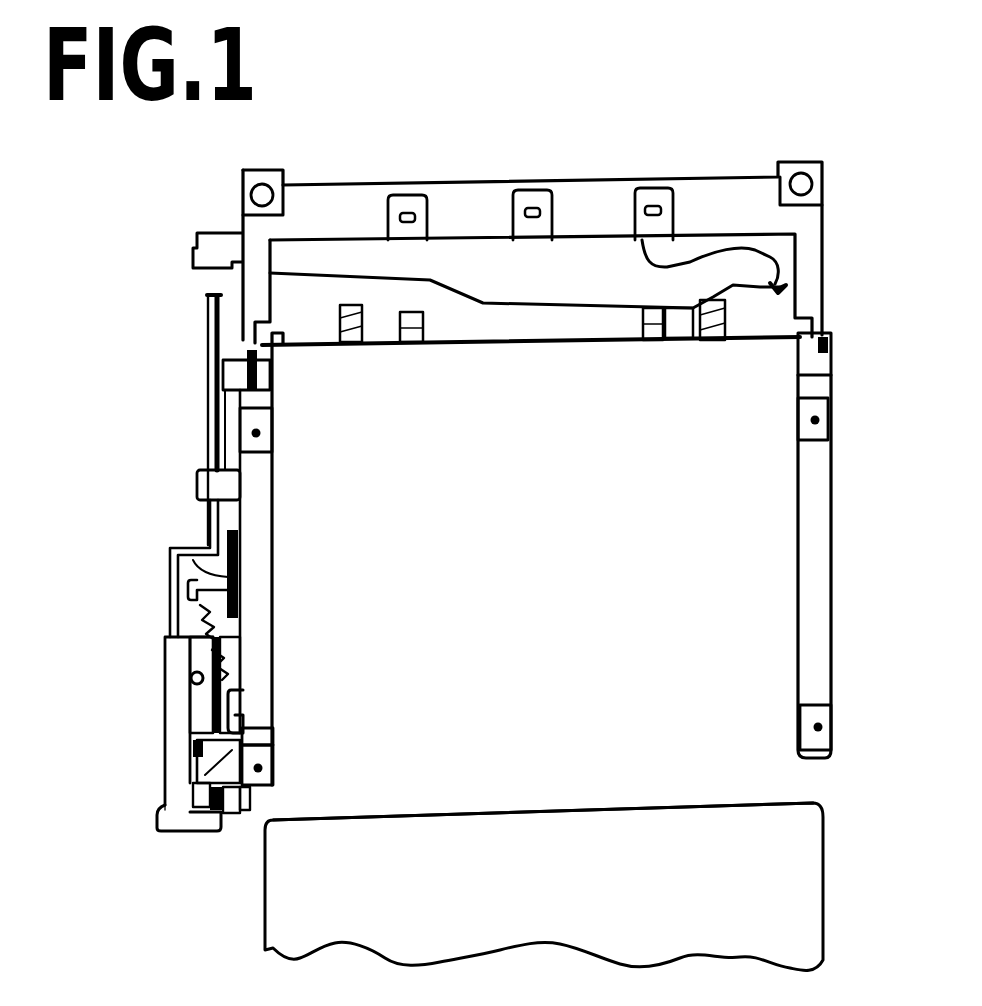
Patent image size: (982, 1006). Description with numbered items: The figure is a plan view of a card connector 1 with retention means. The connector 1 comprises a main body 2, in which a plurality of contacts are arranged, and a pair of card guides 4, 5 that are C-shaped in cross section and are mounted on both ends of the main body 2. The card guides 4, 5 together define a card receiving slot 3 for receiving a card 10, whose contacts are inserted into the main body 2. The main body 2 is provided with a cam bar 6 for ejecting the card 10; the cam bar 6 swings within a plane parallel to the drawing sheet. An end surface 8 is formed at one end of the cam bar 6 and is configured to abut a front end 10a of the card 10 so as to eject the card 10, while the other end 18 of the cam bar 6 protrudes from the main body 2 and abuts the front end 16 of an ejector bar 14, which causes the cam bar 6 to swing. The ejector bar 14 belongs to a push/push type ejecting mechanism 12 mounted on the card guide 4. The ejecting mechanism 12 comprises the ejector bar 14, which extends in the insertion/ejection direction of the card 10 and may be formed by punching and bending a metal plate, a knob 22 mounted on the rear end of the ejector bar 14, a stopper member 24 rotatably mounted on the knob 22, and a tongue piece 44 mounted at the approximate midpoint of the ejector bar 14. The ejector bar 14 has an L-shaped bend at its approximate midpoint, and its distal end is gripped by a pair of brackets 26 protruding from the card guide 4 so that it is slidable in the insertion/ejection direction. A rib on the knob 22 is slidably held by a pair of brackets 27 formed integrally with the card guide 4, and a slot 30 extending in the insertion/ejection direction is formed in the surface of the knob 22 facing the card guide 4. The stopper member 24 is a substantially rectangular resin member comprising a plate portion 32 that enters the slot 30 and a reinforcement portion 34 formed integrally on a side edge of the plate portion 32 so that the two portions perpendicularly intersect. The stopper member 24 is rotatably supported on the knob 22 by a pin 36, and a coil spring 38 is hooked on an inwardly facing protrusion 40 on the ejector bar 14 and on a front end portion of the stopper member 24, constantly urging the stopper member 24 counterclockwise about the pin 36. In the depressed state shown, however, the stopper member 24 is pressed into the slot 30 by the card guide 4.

The connector 1 is at (738, 70).
The main body 2 is at (473, 197).
The card receiving slot 3 is at (737, 701).
The card guide 4 is at (278, 488).
The card guide 5 is at (809, 492).
The cam bar 6 is at (590, 265).
The end surface 8 is at (760, 300).
The card 10 is at (607, 833).
The front end 10a is at (458, 813).
The ejecting mechanism 12 is at (183, 497).
The ejector bar 14 is at (213, 397).
The front end 16 is at (217, 292).
The other end 18 is at (203, 247).
The knob 22 is at (182, 817).
The stopper member 24 is at (260, 815).
The brackets 26 is at (207, 482).
The brackets 27 is at (277, 755).
The slot 30 is at (203, 710).
The plate portion 32 is at (245, 815).
The reinforcement portion 34 is at (243, 722).
The pin 36 is at (203, 677).
The coil spring 38 is at (207, 602).
The protrusion 40 is at (200, 593).
The tongue piece 44 is at (196, 548).